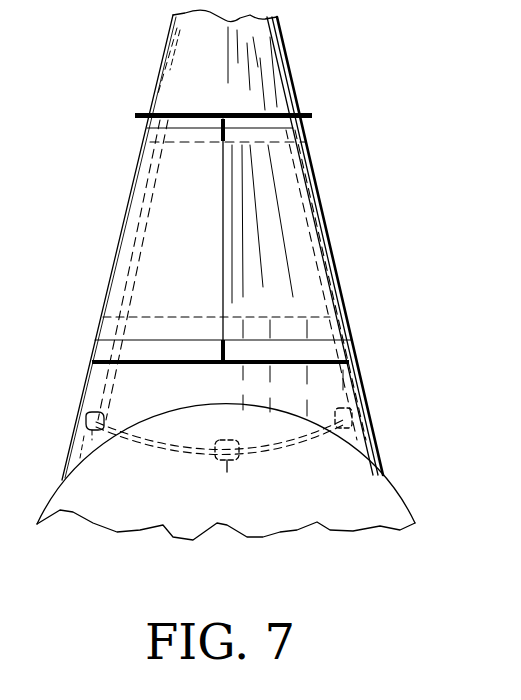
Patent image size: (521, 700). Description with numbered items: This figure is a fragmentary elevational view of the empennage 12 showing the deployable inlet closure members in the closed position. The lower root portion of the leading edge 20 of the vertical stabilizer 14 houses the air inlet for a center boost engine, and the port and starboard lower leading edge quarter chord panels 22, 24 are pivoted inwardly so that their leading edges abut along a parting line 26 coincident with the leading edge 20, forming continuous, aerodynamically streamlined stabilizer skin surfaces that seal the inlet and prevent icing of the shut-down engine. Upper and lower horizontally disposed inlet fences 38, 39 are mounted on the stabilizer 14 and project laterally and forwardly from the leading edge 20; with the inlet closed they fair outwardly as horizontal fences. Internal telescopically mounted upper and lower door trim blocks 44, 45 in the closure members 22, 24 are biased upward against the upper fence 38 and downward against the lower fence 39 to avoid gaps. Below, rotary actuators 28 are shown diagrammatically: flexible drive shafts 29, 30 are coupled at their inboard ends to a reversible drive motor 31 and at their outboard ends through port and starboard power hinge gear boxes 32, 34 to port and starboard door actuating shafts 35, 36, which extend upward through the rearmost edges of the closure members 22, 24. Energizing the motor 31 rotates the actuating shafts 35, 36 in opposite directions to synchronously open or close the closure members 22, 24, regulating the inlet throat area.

The empennage 12 is at (395, 323).
The vertical stabilizer 14 is at (291, 80).
The leading edge 20 is at (258, 57).
The port lower leading edge quarter chord panel 22 is at (295, 235).
The starboard lower leading edge quarter chord panel 24 is at (153, 223).
The parting line 26 is at (221, 250).
The rotary actuators 28 is at (362, 440).
The flexible drive shaft 29 is at (273, 447).
The flexible drive shaft 30 is at (168, 445).
The reversible drive motor 31 is at (218, 452).
The port power hinge gear box 32 is at (360, 418).
The starboard power hinge gear box 34 is at (80, 420).
The port door actuating shaft 35 is at (325, 283).
The starboard door actuating shaft 36 is at (123, 290).
The upper horizontal inlet fence 38 is at (147, 112).
The lower horizontal inlet fence 39 is at (152, 366).
The upper door trim block 44 is at (142, 142).
The lower door trim block 45 is at (253, 352).